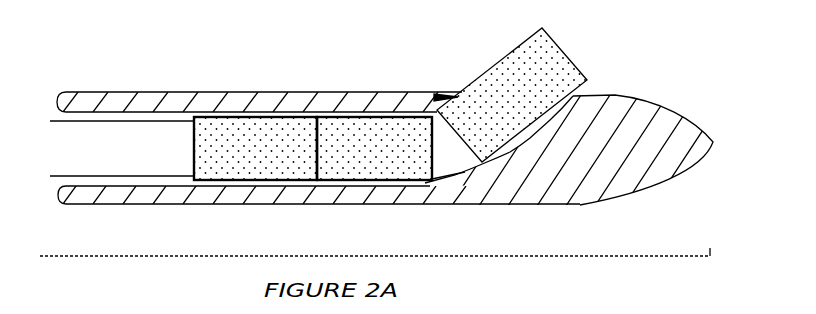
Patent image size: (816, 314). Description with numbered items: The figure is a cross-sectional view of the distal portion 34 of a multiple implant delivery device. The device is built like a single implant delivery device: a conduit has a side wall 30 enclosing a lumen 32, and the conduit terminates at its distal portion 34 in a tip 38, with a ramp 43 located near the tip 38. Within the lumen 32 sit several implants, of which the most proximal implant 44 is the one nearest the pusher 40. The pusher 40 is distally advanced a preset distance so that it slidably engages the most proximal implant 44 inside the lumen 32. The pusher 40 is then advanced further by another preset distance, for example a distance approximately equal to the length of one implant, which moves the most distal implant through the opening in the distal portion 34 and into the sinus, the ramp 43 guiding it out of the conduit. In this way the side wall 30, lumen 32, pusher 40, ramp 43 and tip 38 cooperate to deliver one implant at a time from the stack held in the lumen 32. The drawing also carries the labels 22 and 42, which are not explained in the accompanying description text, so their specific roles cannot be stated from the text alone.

The elongate shaft 22 is at (80, 88).
The side wall 30 is at (158, 110).
The most proximal implant 44 is at (259, 135).
The lumen 32 is at (432, 100).
The pusher 40 is at (563, 52).
The tip 38 is at (716, 143).
The tip proximal surface 42 is at (462, 167).
The ramp 43 is at (537, 117).
The distal portion 34 is at (428, 256).